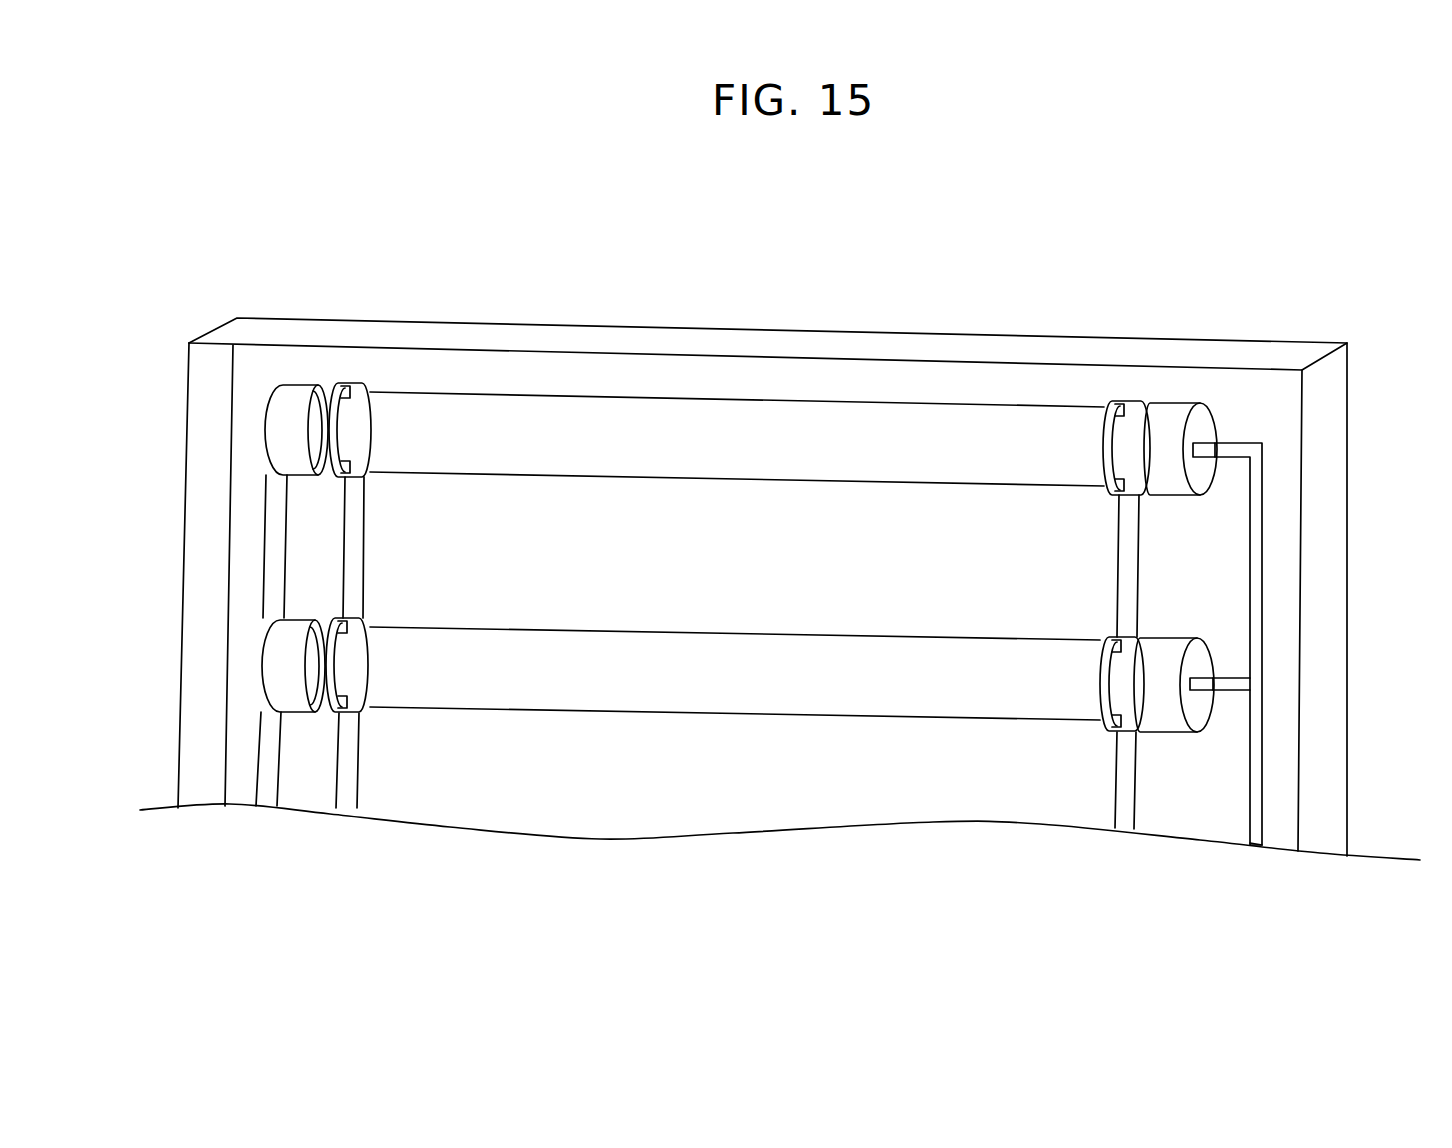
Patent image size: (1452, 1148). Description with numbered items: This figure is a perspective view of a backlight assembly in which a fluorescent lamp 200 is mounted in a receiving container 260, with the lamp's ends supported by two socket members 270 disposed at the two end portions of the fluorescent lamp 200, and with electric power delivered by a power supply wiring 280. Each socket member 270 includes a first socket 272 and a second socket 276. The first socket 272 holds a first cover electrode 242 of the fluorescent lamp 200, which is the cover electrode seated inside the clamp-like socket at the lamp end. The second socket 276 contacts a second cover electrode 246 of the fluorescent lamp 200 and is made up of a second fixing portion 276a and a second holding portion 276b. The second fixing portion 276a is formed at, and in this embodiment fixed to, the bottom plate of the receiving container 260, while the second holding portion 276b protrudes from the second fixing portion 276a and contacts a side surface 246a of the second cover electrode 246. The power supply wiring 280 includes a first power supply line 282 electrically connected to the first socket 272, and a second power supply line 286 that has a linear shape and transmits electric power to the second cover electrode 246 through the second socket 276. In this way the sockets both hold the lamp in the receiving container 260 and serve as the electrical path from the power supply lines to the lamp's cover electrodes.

The fluorescent lamp 200 is at (797, 487).
The first cover electrode 242 is at (1102, 686).
The second cover electrode 246 is at (1178, 649).
The side surface 246a is at (1202, 703).
The receiving container 260 is at (1337, 418).
The socket member 270 is at (1250, 254).
The first socket 272 is at (1117, 400).
The second socket 276 is at (1293, 298).
The second fixing portion 276a is at (1235, 449).
The second holding portion 276b is at (1208, 446).
The power supply wiring 280 is at (1200, 912).
The first power supply line 282 is at (1125, 826).
The second power supply line 286 is at (1250, 812).